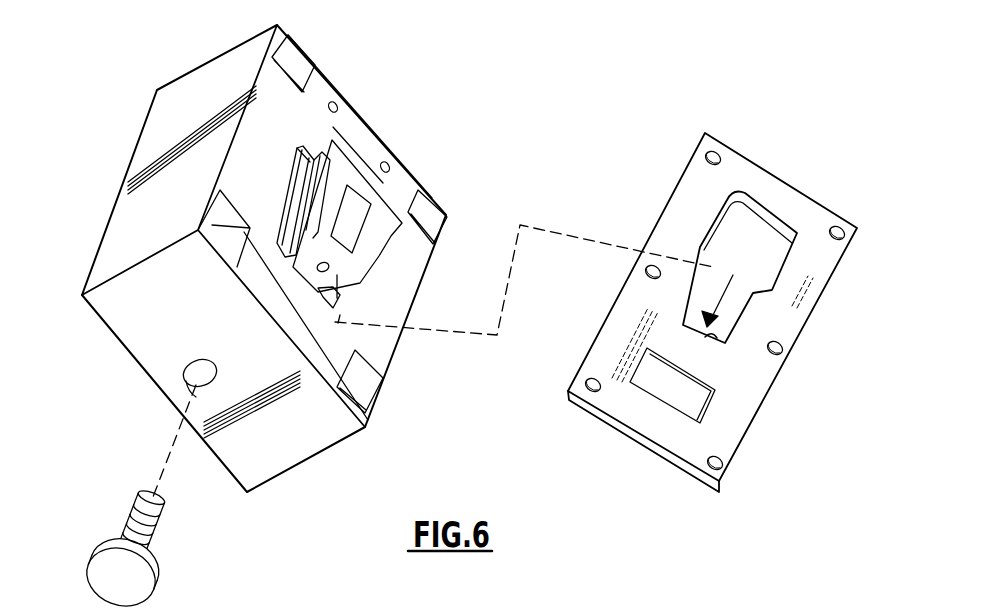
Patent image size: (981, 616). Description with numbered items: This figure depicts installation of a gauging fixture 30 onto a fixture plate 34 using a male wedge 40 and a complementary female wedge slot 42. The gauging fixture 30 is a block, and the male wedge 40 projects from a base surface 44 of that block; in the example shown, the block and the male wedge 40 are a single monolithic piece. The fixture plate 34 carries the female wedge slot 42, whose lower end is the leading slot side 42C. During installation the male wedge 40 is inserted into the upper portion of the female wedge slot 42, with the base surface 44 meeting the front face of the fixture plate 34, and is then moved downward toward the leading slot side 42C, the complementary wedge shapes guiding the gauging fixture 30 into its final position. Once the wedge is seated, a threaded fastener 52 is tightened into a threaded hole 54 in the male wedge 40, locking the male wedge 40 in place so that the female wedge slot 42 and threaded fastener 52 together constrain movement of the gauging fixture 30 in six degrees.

The gauging fixture 30 is at (125, 330).
The fixture plate 34 is at (737, 462).
The male wedge 40 is at (371, 157).
The female wedge slot 42 is at (770, 212).
The leading slot side 42C is at (717, 344).
The base surface 44 is at (265, 257).
The threaded fastener 52 is at (153, 556).
The threaded hole 54 is at (190, 388).